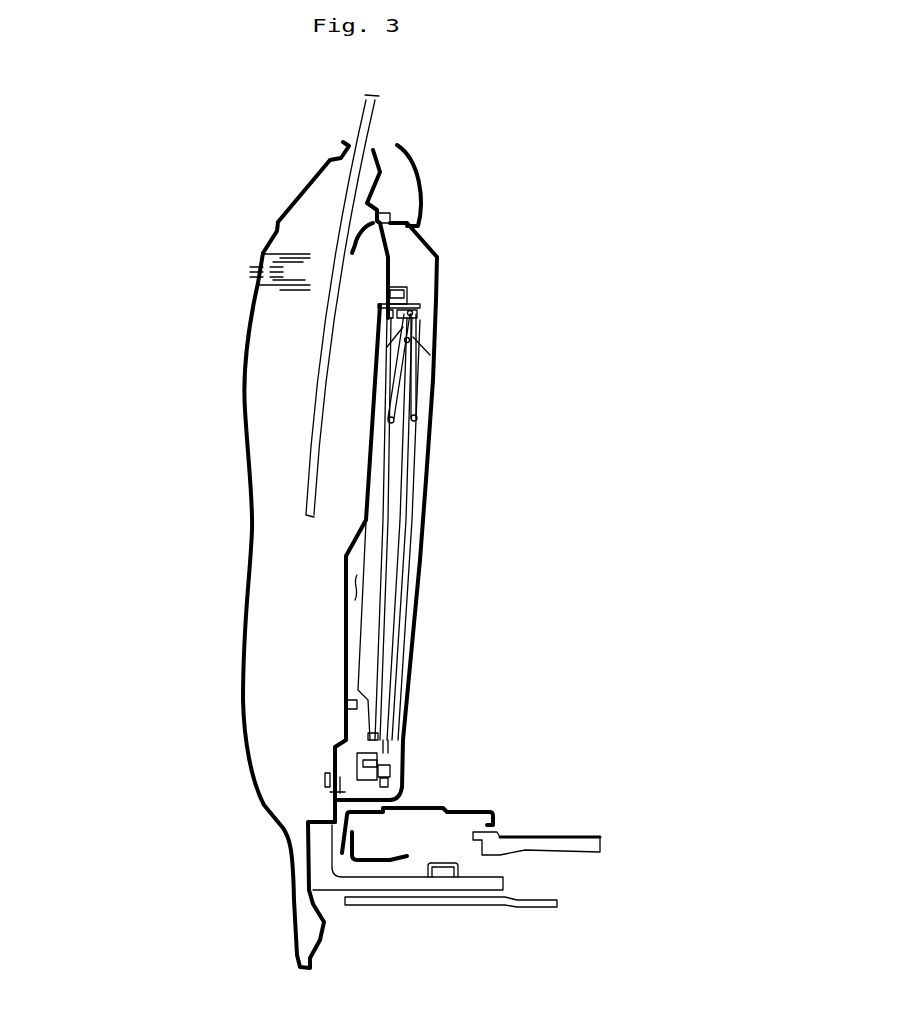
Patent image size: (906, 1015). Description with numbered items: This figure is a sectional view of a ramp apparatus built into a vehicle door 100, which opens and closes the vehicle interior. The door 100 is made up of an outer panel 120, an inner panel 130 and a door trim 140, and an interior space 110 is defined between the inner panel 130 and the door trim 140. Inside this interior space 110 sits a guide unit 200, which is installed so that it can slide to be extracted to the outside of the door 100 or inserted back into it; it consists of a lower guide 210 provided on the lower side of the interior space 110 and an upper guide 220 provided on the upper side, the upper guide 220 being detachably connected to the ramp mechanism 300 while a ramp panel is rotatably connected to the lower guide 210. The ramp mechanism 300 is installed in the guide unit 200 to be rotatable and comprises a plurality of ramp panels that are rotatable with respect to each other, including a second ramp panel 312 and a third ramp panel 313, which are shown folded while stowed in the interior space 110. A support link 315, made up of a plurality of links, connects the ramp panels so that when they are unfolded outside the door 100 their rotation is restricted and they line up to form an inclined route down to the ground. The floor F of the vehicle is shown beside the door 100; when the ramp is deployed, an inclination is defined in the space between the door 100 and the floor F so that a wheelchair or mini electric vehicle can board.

The door 100 is at (222, 531).
The interior space 110 is at (350, 590).
The outer panel 120 is at (273, 495).
The inner panel 130 is at (343, 673).
The door trim 140 is at (437, 297).
The guide unit 200 is at (360, 550).
The lower guide 210 is at (325, 780).
The upper guide 220 is at (407, 287).
The ramp mechanism 300 is at (360, 550).
The second ramp panel 312 is at (405, 577).
The third ramp panel 313 is at (367, 727).
The support link 315 is at (420, 364).
The floor F is at (460, 810).